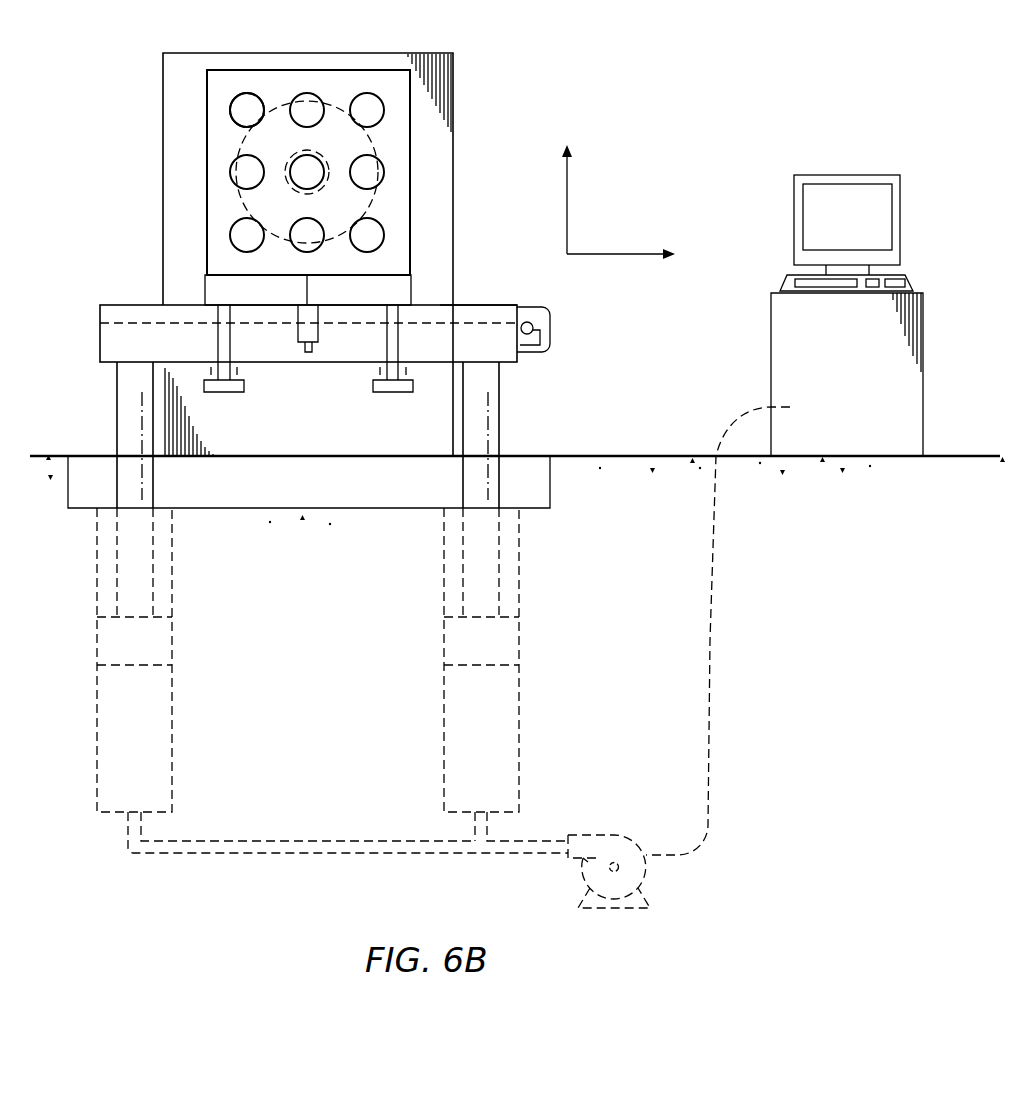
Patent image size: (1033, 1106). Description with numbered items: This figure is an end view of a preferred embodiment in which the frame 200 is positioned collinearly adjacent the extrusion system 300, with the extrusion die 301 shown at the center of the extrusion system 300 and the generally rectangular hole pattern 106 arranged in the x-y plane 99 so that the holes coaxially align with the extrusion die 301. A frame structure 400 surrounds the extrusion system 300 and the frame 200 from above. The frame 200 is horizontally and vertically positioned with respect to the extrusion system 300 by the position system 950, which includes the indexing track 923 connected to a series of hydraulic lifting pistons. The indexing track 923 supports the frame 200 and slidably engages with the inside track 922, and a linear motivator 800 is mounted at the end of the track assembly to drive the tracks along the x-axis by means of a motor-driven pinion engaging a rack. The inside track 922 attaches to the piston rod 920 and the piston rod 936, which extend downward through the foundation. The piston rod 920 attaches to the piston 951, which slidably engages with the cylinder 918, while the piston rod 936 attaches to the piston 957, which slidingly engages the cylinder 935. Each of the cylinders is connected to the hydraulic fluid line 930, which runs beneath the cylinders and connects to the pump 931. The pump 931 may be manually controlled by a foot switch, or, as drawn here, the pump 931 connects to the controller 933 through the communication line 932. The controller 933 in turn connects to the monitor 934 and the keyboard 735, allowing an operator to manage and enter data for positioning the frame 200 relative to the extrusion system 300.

The hole pattern 106 is at (231, 92).
The frame 400 is at (197, 148).
The extrusion system 300 is at (458, 141).
The extrusion die 301 is at (372, 197).
The frame 200 is at (215, 292).
The indexing track 923 is at (483, 305).
The linear motivator 800 is at (553, 323).
The inside track 922 is at (122, 340).
The piston rod 936 is at (117, 412).
The piston rod 920 is at (499, 412).
The cylinder 918 is at (513, 552).
The piston 957 is at (117, 642).
The piston 951 is at (503, 642).
The position system 950 is at (343, 739).
The cylinder 935 is at (98, 660).
The communication line 932 is at (710, 657).
The hydraulic fluid line 930 is at (275, 856).
The pump 931 is at (627, 910).
The monitor 934 is at (857, 175).
The keyboard 735 is at (786, 284).
The controller 933 is at (866, 386).
The x-y plane 99 is at (630, 262).